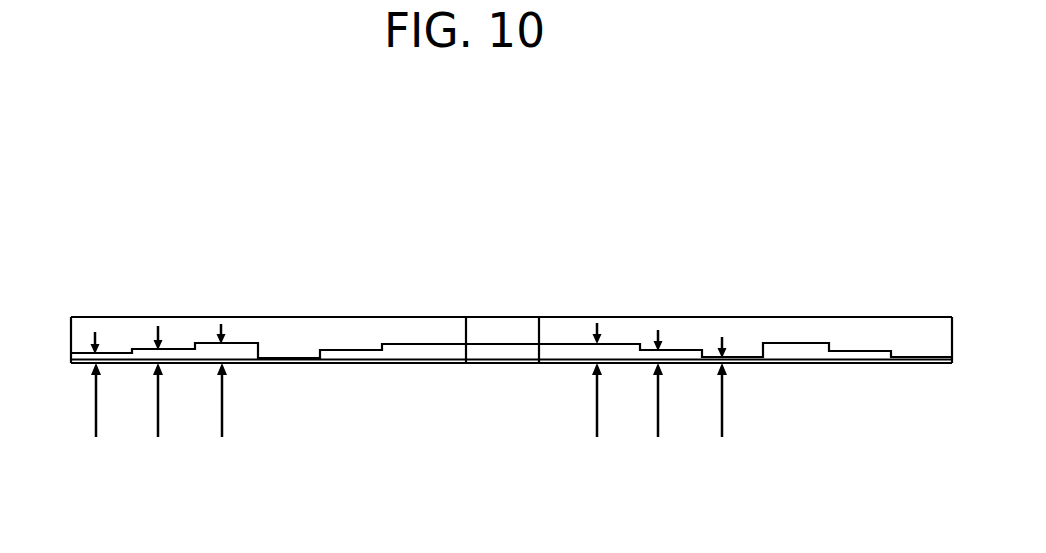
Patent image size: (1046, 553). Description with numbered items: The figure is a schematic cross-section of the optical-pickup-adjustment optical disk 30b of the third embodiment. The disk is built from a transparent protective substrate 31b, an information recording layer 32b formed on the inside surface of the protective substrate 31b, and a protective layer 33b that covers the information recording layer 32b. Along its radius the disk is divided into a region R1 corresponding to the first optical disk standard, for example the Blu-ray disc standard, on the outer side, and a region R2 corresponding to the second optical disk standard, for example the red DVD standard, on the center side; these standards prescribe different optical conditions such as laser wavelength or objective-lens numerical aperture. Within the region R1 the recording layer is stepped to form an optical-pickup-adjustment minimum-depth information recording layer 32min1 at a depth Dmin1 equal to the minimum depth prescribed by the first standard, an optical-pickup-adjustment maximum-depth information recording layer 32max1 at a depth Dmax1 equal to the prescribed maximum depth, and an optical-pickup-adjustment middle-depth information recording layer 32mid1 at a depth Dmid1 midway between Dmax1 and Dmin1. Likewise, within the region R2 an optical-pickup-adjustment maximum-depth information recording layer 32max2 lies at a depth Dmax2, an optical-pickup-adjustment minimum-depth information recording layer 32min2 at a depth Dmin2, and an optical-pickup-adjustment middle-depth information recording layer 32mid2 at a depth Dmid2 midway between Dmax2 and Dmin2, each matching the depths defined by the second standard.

The optical-pickup-adjustment optical disk 30b is at (542, 247).
The transparent protective substrate 31b is at (432, 358).
The information recording layer 32b is at (412, 344).
The protective layer 33b is at (402, 323).
The region corresponding to the first optical disk standard R1 is at (260, 198).
The region corresponding to the second optical disk standard R2 is at (760, 198).
The optical-pickup-adjustment minimum-depth information recording layer 32min1 is at (133, 306).
The optical-pickup-adjustment middle-depth information recording layer 32mid1 is at (195, 306).
The optical-pickup-adjustment maximum-depth information recording layer 32max1 is at (260, 306).
The optical-pickup-adjustment maximum-depth information recording layer 32max2 is at (635, 306).
The optical-pickup-adjustment middle-depth information recording layer 32mid2 is at (697, 306).
The optical-pickup-adjustment minimum-depth information recording layer 32min2 is at (760, 306).
The depth of the minimum-depth information recording layer Dmin1 is at (85, 418).
The depth of the middle-depth information recording layer Dmid1 is at (157, 440).
The depth of the maximum-depth information recording layer Dmax1 is at (237, 418).
The depth of the minimum-depth information recording layer Dmin2 is at (587, 418).
The depth of the middle-depth information recording layer Dmid2 is at (657, 440).
The depth of the maximum-depth information recording layer Dmax2 is at (737, 418).